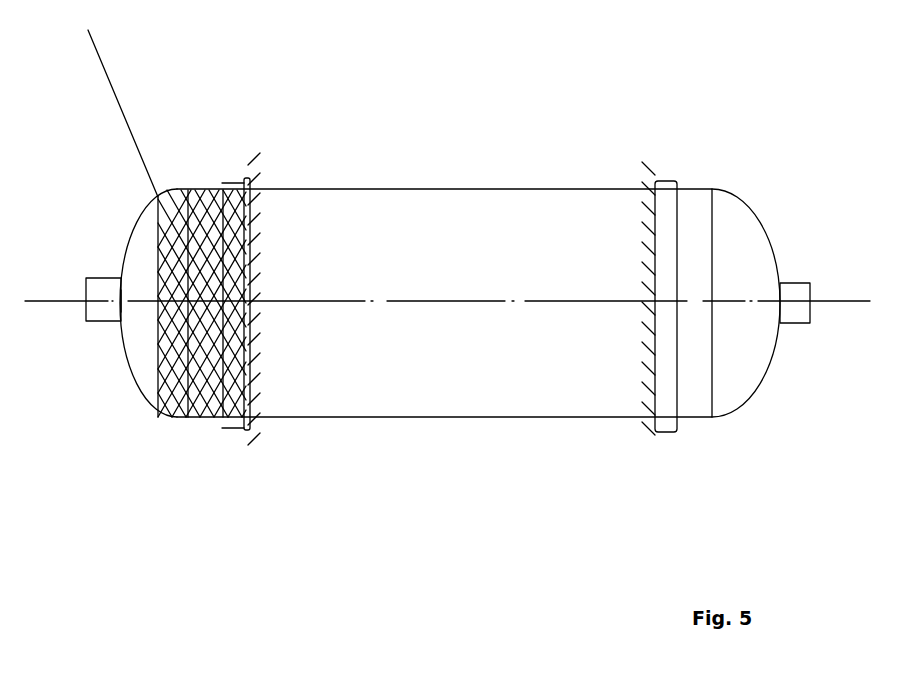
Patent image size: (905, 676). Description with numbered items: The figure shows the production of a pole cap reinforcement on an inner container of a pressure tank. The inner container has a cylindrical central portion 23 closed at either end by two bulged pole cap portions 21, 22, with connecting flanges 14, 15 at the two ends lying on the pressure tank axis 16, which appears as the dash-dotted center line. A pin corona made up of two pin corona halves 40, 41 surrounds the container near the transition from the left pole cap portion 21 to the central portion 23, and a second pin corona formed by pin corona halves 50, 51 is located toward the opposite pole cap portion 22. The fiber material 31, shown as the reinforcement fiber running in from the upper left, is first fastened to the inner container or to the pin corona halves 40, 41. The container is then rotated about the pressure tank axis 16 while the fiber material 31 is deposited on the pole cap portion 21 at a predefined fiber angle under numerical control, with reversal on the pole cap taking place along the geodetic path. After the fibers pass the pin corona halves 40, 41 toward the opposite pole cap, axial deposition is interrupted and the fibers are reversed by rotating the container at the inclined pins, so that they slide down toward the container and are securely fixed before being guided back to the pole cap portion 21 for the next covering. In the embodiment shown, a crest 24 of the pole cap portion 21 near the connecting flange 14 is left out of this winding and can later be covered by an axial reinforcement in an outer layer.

The connecting flange 14 is at (91, 276).
The connecting flange 15 is at (793, 328).
The pressure tank axis 16 is at (850, 301).
The pole cap portion 21 is at (143, 369).
The pole cap portion 22 is at (753, 247).
The central portion 23 is at (472, 191).
The crest 24 is at (123, 343).
The fiber material 31 is at (129, 131).
The pin corona half 40 is at (205, 271).
The pin corona half 41 is at (229, 182).
The pin corona half 50 is at (687, 267).
The pin corona half 51 is at (673, 187).